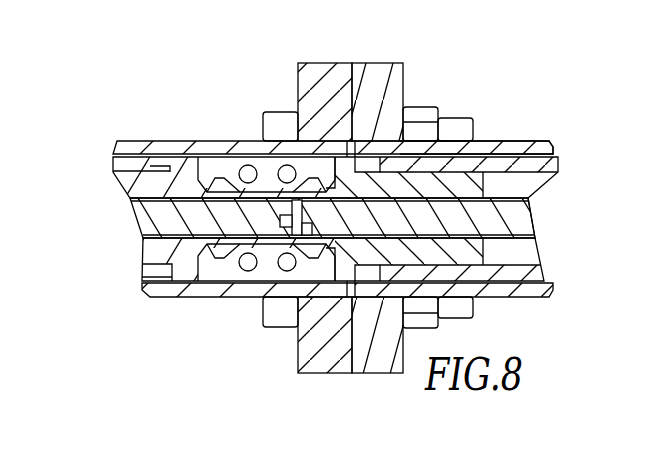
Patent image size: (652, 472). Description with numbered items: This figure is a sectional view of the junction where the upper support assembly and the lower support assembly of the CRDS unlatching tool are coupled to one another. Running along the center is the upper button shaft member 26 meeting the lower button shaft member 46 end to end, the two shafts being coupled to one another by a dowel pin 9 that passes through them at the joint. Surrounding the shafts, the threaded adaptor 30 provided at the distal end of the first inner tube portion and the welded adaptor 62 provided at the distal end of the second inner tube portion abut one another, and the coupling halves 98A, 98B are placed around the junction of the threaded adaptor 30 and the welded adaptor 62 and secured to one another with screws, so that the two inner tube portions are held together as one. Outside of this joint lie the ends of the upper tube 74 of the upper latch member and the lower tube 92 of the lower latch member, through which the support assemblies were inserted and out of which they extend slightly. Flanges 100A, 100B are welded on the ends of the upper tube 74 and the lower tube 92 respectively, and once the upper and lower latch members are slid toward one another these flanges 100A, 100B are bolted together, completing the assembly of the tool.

The upper tube 74 is at (131, 141).
The lower tube 92 is at (505, 141).
The welded adaptor 62 is at (356, 170).
The coupling half 98A is at (262, 163).
The upper button shaft member 26 is at (147, 213).
The lower button shaft member 46 is at (522, 228).
The dowel pin 9 is at (292, 217).
The threaded adaptor 30 is at (217, 257).
The coupling half 98B is at (267, 272).
The flange 100A is at (321, 72).
The flange 100B is at (383, 72).